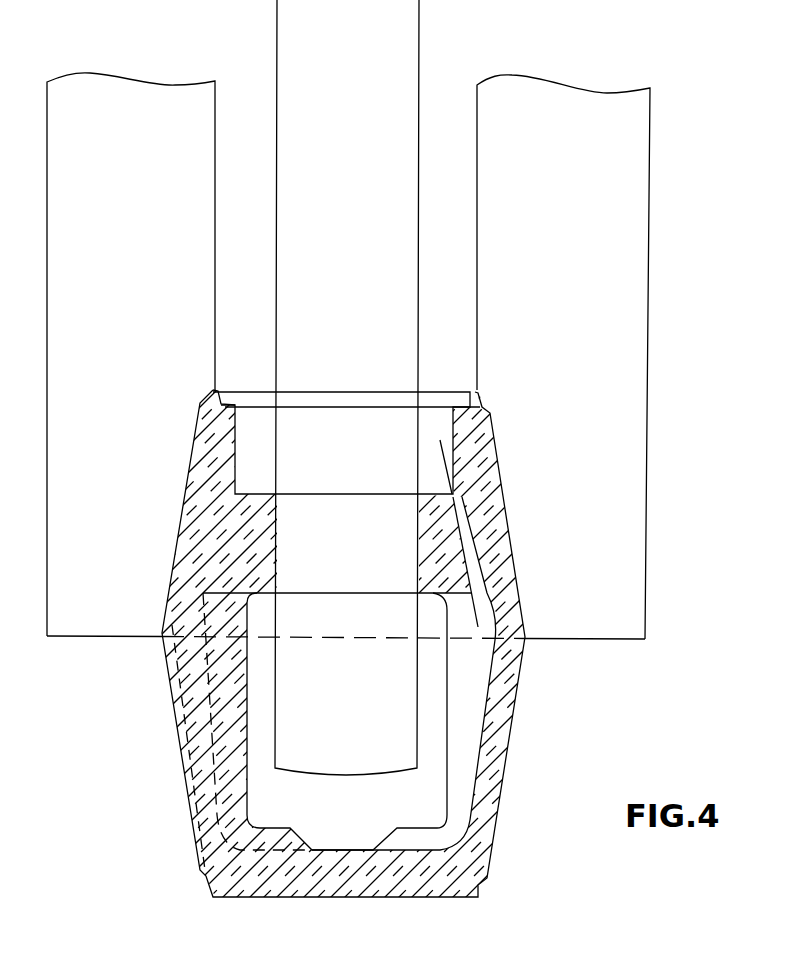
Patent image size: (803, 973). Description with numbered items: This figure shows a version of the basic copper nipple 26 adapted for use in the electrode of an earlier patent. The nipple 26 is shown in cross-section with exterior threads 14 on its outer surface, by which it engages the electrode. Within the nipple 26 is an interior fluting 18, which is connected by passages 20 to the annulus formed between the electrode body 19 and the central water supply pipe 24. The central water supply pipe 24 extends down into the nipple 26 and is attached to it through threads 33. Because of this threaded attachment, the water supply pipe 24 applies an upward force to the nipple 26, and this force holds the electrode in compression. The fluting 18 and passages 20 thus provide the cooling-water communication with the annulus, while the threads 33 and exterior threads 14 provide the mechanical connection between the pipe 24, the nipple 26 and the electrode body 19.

The exterior threads 14 is at (526, 649).
The fluting 18 is at (463, 692).
The electrode body 19 is at (650, 241).
The passages 20 is at (489, 503).
The central water supply pipe 24 is at (428, 233).
The nipple 26 is at (503, 728).
The threads 33 is at (282, 536).